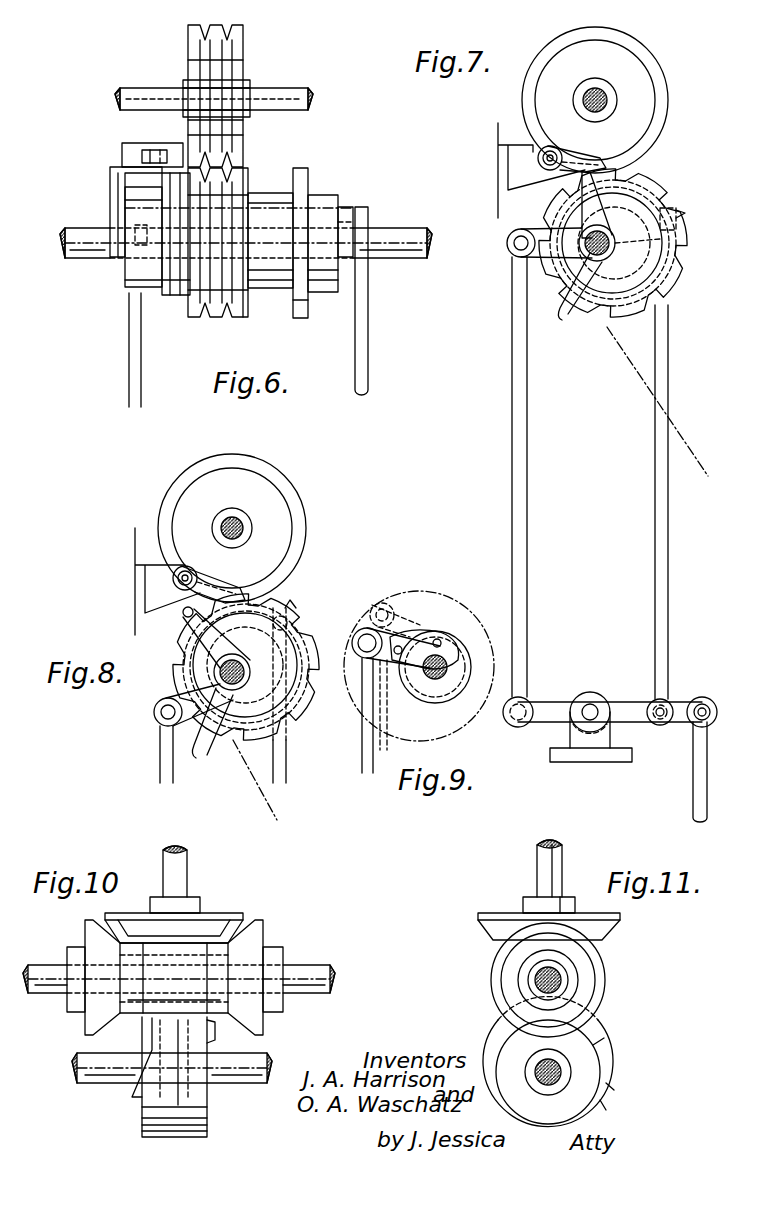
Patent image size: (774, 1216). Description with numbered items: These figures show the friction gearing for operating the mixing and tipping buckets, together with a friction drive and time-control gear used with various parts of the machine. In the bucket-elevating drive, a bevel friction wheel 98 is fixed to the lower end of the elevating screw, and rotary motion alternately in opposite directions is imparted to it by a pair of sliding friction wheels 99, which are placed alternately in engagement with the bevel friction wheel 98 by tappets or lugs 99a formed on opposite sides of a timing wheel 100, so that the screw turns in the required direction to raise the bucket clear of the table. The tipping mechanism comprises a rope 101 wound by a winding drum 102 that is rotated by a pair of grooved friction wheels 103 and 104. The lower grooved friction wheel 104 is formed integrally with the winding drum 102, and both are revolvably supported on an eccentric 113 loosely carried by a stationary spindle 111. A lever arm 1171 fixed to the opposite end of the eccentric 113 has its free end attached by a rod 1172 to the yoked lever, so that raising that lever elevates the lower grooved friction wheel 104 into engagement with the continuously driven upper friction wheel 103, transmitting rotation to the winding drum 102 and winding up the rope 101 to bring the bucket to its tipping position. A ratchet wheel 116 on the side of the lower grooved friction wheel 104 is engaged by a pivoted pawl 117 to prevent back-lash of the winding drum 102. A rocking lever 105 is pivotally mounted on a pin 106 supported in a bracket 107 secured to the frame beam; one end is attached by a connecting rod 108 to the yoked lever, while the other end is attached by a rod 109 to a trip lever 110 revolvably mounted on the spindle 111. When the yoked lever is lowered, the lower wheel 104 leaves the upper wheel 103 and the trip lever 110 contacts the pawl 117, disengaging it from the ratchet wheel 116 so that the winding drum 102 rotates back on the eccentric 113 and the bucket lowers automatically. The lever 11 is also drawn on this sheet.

In FIG. 6, the lever 11 is at (370, 332).
In FIG. 10, the bevel friction wheel 98 is at (200, 928).
In FIG. 11, the bevel friction wheel 98 is at (603, 930).
In FIG. 10, the sliding friction wheels 99 is at (268, 918).
In FIG. 11, the sliding friction wheels 99 is at (605, 985).
In FIG. 10, the tappets or lugs 99a is at (215, 1035).
In FIG. 11, the tappets or lugs 99a is at (603, 1090).
In FIG. 10, the timing wheel 100 is at (207, 1117).
In FIG. 11, the timing wheel 100 is at (583, 1073).
In FIG. 7, the rope 101 is at (633, 370).
In FIG. 6, the winding drum 102 is at (277, 203).
In FIG. 6, the upper grooved friction wheel 103 is at (243, 62).
In FIG. 7, the upper grooved friction wheel 103 is at (635, 82).
In FIG. 8, the upper grooved friction wheel 103 is at (262, 492).
In FIG. 6, the lower grooved friction wheel 104 is at (240, 170).
In FIG. 7, the lower grooved friction wheel 104 is at (650, 177).
In FIG. 8, the lower grooved friction wheel 104 is at (300, 717).
In FIG. 7, the rocking lever 105 is at (547, 702).
In FIG. 7, the pin 106 is at (591, 706).
In FIG. 7, the bracket 107 is at (580, 760).
In FIG. 7, the connecting rod 108 is at (693, 782).
In FIG. 6, the rod 109 is at (128, 332).
In FIG. 7, the rod 109 is at (511, 418).
In FIG. 8, the rod 109 is at (158, 762).
In FIG. 6, the trip lever 110 is at (110, 190).
In FIG. 7, the trip lever 110 is at (516, 262).
In FIG. 8, the trip lever 110 is at (167, 693).
In FIG. 6, the spindle 111 is at (400, 260).
In FIG. 7, the spindle 111 is at (575, 296).
In FIG. 8, the spindle 111 is at (211, 731).
In FIG. 6, the eccentric 113 is at (357, 200).
In FIG. 8, the eccentric 113 is at (267, 653).
In FIG. 9, the eccentric 113 is at (406, 700).
In FIG. 6, the ratchet wheel 116 is at (173, 250).
In FIG. 8, the ratchet wheel 116 is at (185, 650).
In FIG. 6, the pivoted pawl 117 is at (172, 143).
In FIG. 7, the pivoted pawl 117 is at (600, 153).
In FIG. 8, the pivoted pawl 117 is at (238, 590).
In FIG. 7, the lever arm 1171 is at (682, 212).
In FIG. 8, the lever arm 1171 is at (300, 598).
In FIG. 9, the lever arm 1171 is at (415, 635).
In FIG. 7, the rod 1172 is at (655, 428).
In FIG. 8, the rod 1172 is at (290, 760).